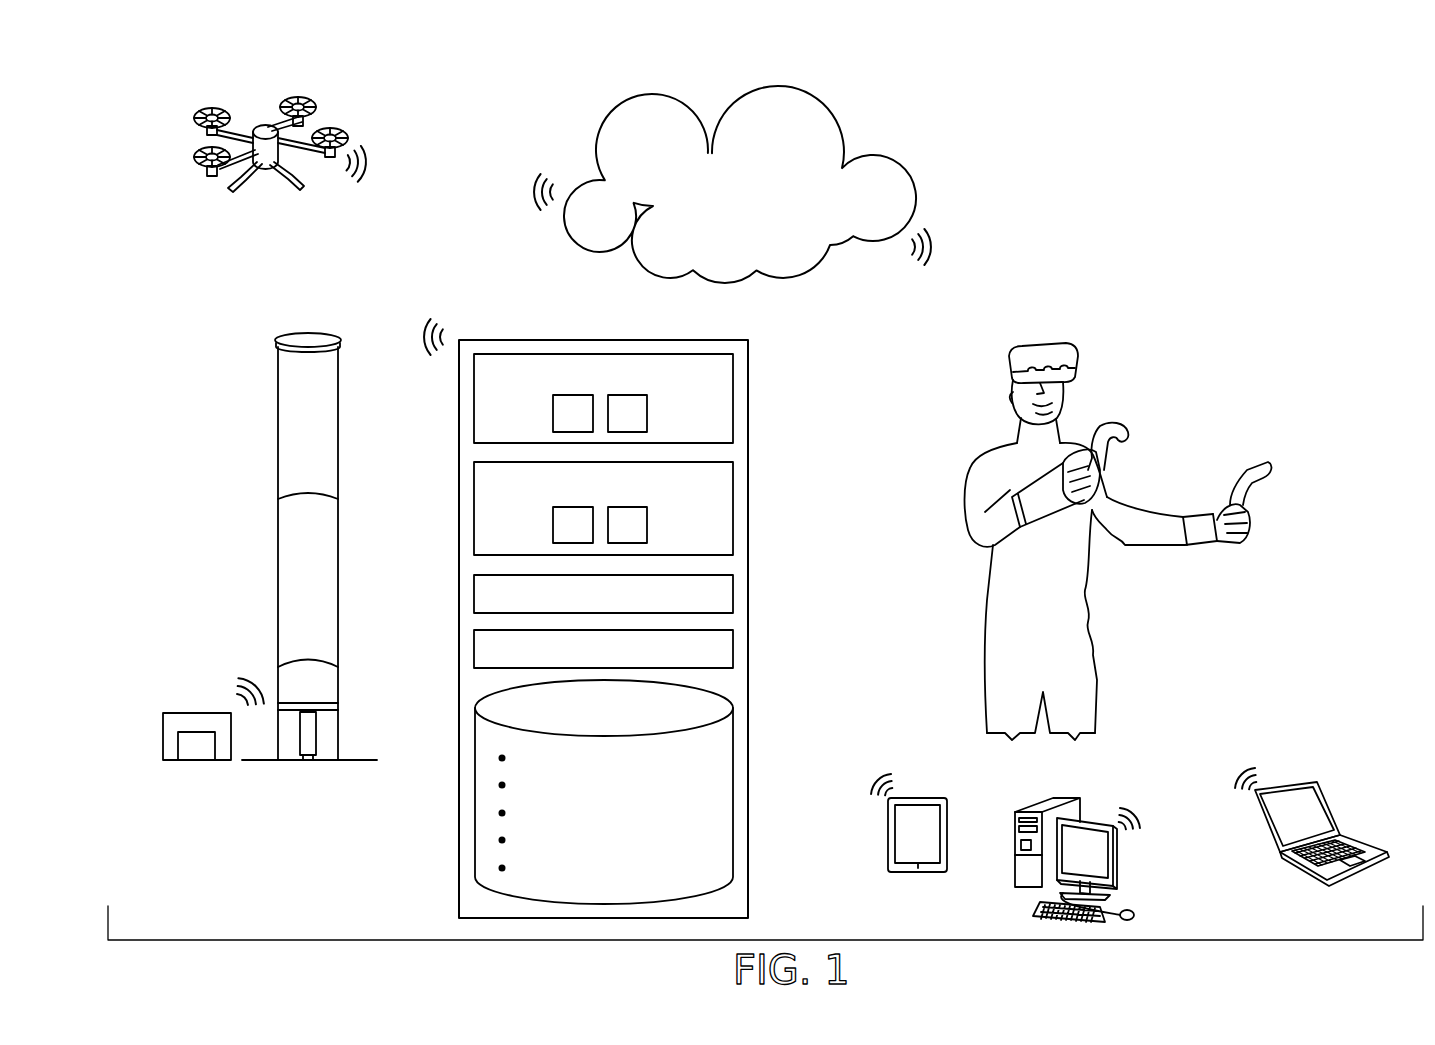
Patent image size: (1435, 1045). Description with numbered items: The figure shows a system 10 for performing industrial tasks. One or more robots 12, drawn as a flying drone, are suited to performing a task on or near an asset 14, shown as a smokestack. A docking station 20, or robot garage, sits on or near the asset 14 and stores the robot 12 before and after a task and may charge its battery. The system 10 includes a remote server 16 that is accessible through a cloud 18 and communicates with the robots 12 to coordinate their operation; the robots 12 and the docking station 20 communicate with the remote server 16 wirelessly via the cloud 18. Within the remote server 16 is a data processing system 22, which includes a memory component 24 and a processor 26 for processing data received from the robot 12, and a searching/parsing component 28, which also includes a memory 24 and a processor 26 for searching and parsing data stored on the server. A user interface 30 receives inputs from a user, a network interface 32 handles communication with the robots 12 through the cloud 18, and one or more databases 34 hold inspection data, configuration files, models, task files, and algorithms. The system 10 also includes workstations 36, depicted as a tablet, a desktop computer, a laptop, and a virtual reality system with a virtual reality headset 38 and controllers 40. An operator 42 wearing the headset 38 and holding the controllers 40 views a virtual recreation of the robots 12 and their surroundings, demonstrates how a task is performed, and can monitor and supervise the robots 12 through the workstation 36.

The system 10 is at (1130, 106).
The robot 12 is at (334, 128).
The asset 14 is at (340, 455).
The remote server 16 is at (603, 340).
The cloud 18 is at (751, 203).
The docking station 20 is at (193, 713).
The data processing system 22 is at (735, 397).
The memory component 24 is at (553, 410).
The processor 26 is at (647, 410).
The searching/parsing component 28 is at (735, 505).
The user interface 30 is at (735, 594).
The network interface 32 is at (735, 649).
The database 34 is at (735, 789).
The workstation 36 is at (1142, 632).
The virtual reality headset 38 is at (1080, 356).
The controller 40 is at (1245, 466).
The operator 42 is at (1100, 668).